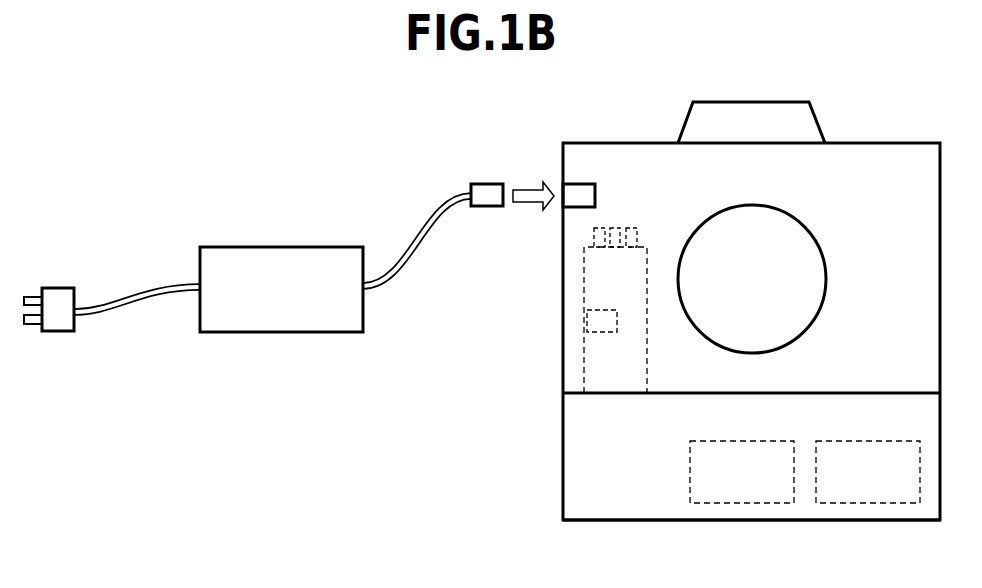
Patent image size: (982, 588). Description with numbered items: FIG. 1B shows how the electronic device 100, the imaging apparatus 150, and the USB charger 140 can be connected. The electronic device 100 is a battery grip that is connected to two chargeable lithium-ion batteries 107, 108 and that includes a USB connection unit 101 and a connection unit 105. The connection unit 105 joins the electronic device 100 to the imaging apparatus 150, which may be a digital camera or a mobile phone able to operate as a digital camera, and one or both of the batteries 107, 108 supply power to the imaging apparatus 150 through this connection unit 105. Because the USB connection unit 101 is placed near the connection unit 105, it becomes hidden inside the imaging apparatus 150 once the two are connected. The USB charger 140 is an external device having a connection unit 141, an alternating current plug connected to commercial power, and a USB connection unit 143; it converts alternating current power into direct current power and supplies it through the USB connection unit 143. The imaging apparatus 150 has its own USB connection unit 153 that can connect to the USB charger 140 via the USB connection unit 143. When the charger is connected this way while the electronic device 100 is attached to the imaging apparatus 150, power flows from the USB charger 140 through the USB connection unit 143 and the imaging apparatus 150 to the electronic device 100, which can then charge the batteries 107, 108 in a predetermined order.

The electronic device 100 is at (753, 520).
The USB connection unit 101 is at (606, 310).
The connection unit 105 is at (612, 226).
The battery 107 is at (722, 441).
The battery 108 is at (848, 441).
The USB charger 140 is at (279, 247).
The connection unit 141 is at (62, 288).
The USB connection unit 143 is at (487, 184).
The imaging apparatus 150 is at (880, 143).
The USB connection unit 153 is at (583, 184).